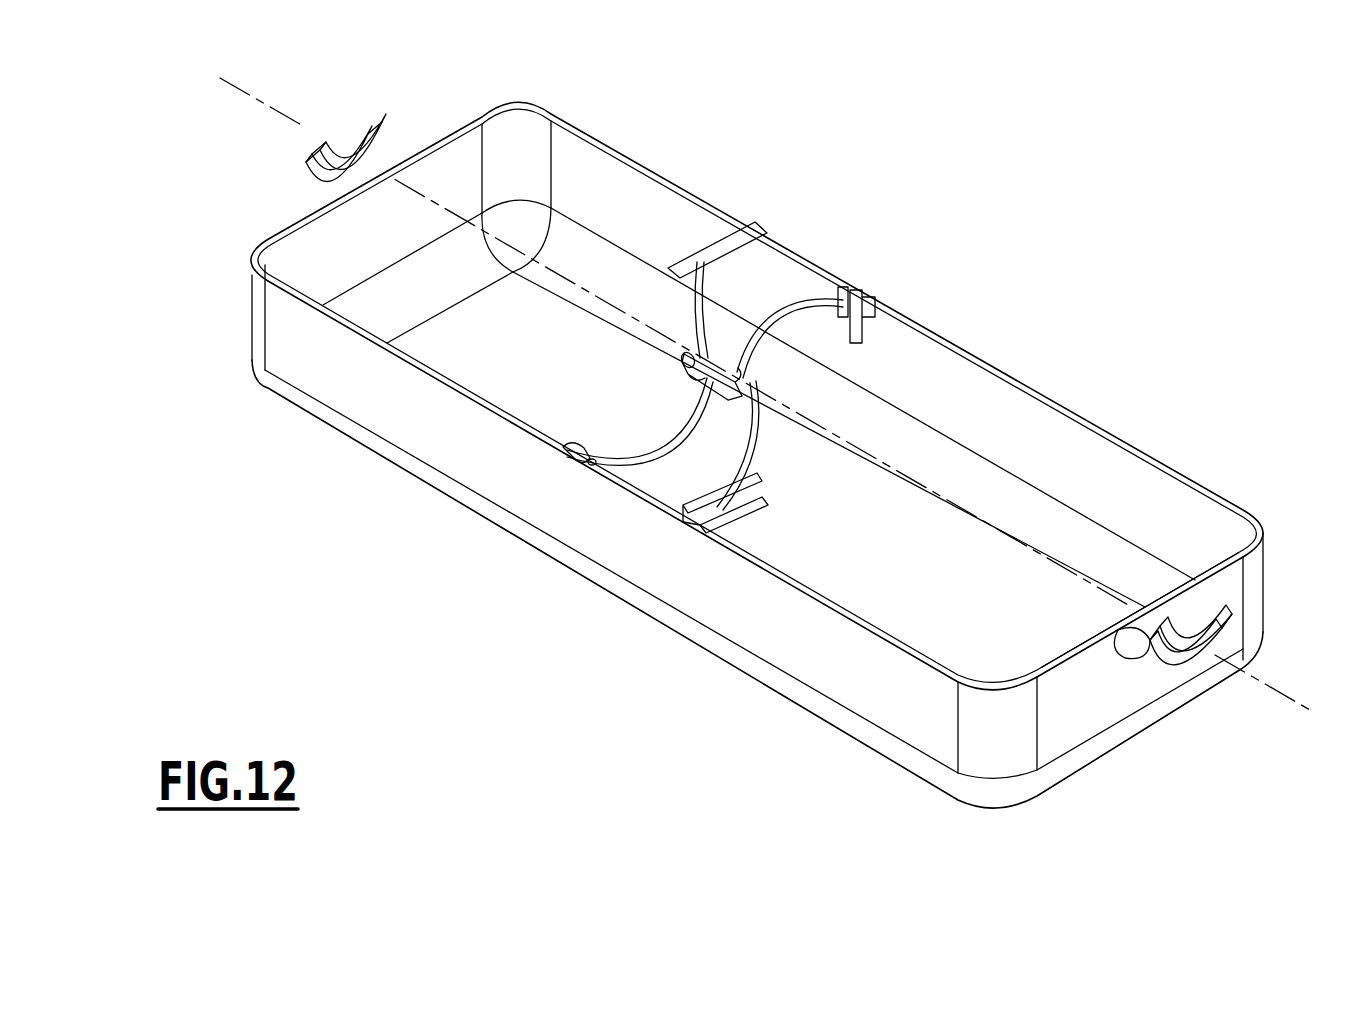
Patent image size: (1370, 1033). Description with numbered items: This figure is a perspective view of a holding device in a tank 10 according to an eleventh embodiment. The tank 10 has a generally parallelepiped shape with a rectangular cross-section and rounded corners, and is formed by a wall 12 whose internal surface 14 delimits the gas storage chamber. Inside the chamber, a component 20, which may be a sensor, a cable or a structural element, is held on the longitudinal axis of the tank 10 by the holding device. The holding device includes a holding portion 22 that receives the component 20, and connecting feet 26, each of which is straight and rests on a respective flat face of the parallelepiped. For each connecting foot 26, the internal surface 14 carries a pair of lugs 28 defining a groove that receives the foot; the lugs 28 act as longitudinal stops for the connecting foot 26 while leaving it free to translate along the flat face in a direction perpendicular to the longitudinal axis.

The tank 10 is at (236, 180).
The wall 12 is at (650, 167).
The internal surface 14 is at (1147, 500).
The component 20 is at (687, 350).
The holding portion 22 is at (690, 417).
The connecting feet 26 is at (753, 227).
The lugs 28 is at (900, 313).